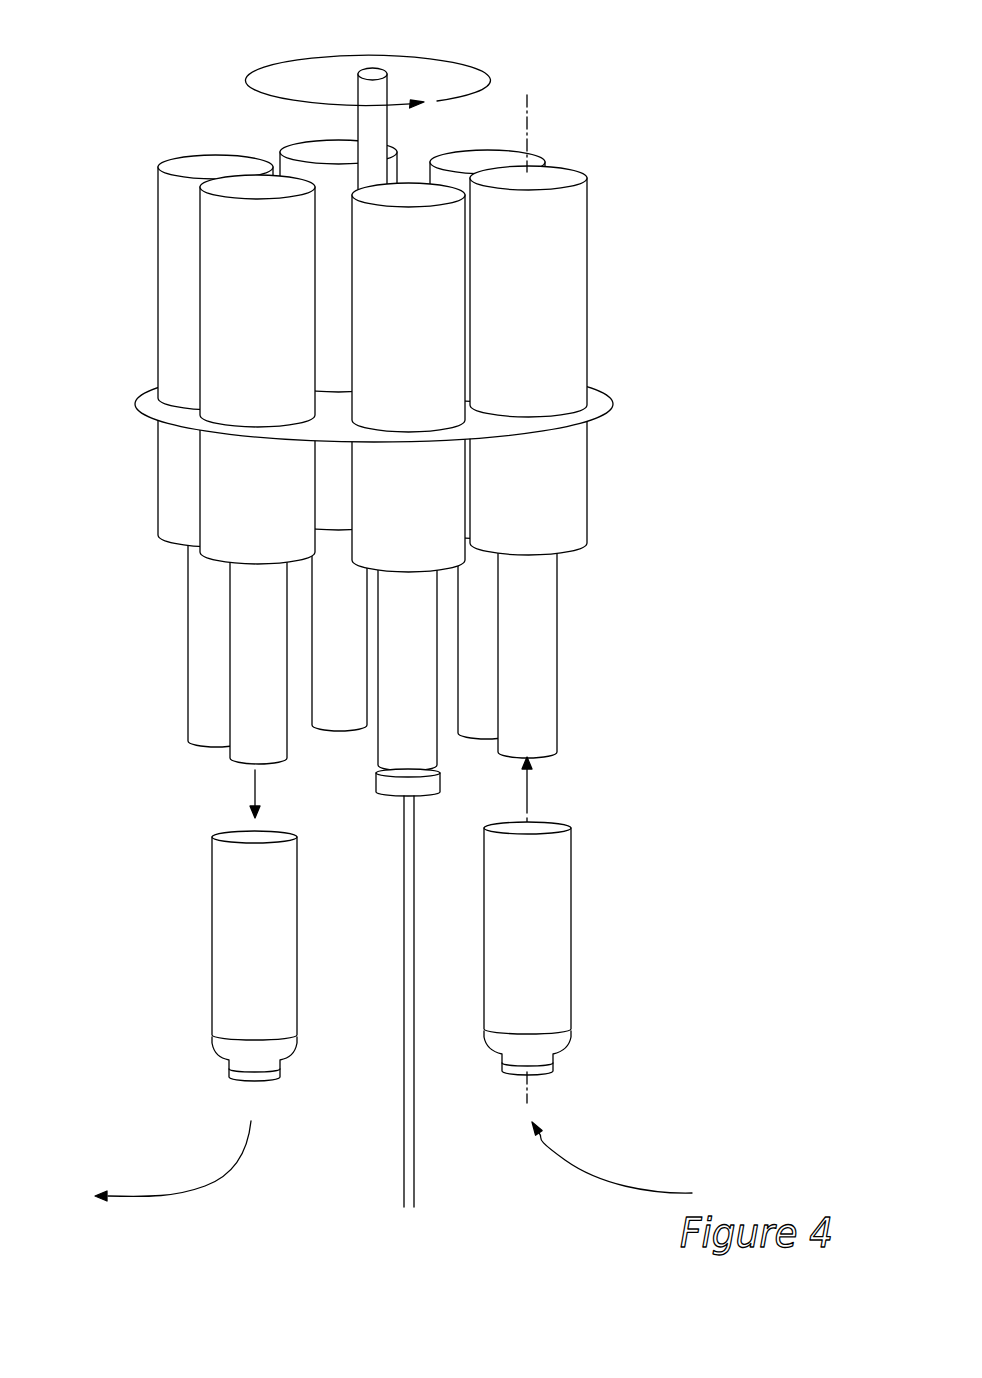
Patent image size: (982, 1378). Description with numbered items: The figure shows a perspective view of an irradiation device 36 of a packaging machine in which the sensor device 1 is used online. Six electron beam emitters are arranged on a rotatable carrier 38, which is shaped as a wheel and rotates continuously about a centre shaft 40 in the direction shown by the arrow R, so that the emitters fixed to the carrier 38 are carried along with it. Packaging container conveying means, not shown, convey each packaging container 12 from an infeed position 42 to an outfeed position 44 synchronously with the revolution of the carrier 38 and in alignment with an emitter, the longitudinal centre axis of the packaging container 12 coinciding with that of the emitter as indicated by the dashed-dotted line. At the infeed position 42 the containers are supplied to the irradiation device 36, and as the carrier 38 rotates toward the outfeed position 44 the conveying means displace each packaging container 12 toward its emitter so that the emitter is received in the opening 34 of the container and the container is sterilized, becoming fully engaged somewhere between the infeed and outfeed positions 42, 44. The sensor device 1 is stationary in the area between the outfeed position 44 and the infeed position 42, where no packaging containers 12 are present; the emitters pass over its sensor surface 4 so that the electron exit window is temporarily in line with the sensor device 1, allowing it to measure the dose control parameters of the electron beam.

The sensor device 1 is at (383, 807).
The sensor surface 4 is at (382, 769).
The packaging container 12 is at (573, 939).
The opening of the packaging container 34 is at (227, 830).
The irradiation device 36 is at (386, 397).
The rotatable carrier 38 is at (148, 390).
The centre shaft 40 is at (357, 125).
The infeed position 42 is at (612, 1166).
The outfeed position 44 is at (173, 1178).